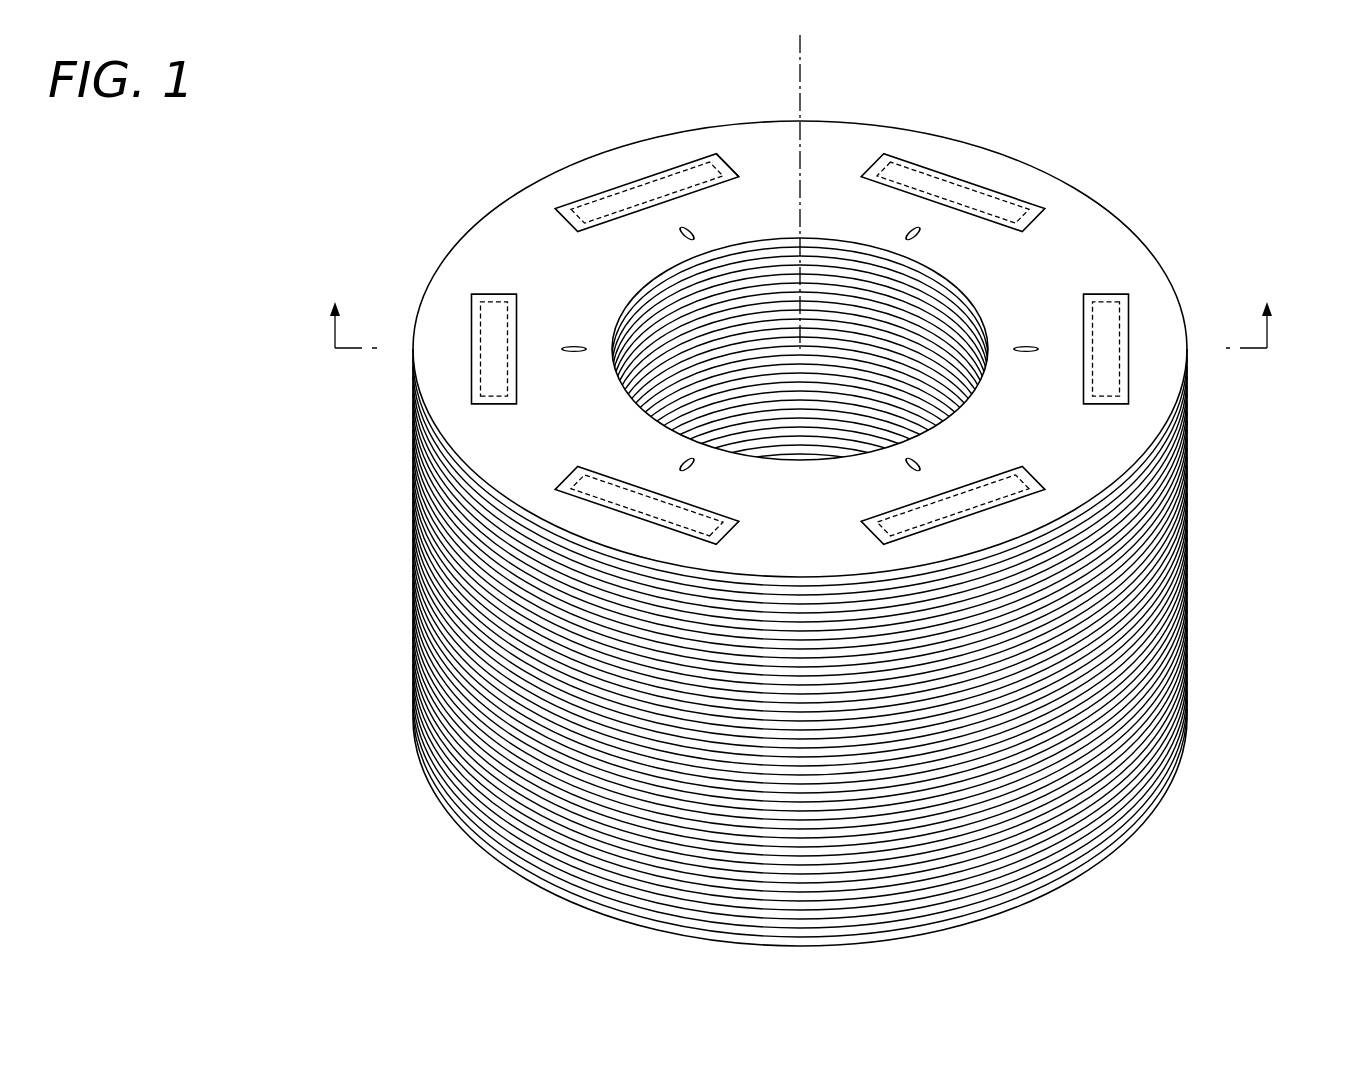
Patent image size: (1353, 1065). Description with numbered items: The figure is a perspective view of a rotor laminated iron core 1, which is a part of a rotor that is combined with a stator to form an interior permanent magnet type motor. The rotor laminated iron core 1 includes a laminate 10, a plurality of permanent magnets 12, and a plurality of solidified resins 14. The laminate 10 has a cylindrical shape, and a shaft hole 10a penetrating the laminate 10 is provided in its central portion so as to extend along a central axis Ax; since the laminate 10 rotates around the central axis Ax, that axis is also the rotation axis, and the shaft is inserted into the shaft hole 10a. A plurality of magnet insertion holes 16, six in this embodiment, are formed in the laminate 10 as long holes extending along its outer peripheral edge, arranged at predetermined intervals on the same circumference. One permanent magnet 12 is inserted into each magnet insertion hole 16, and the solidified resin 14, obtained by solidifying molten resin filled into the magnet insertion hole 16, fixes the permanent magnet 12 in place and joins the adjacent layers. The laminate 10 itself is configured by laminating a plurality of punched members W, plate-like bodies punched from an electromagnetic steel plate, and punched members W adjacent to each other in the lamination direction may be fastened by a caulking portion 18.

The rotor laminated iron core 1 is at (1216, 122).
The laminate 10 is at (1238, 670).
The shaft hole 10a is at (966, 338).
The permanent magnet 12 is at (933, 175).
The solidified resin 14 is at (725, 168).
The magnet insertion hole 16 is at (690, 163).
The caulking portion 18 is at (572, 345).
The punched member W is at (500, 818).
The central axis Ax is at (805, 68).